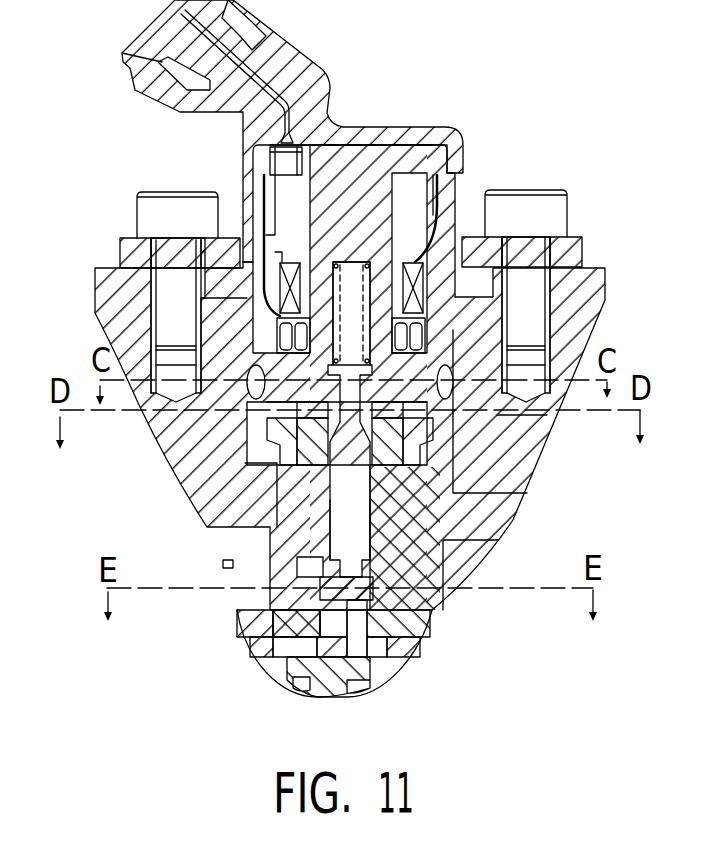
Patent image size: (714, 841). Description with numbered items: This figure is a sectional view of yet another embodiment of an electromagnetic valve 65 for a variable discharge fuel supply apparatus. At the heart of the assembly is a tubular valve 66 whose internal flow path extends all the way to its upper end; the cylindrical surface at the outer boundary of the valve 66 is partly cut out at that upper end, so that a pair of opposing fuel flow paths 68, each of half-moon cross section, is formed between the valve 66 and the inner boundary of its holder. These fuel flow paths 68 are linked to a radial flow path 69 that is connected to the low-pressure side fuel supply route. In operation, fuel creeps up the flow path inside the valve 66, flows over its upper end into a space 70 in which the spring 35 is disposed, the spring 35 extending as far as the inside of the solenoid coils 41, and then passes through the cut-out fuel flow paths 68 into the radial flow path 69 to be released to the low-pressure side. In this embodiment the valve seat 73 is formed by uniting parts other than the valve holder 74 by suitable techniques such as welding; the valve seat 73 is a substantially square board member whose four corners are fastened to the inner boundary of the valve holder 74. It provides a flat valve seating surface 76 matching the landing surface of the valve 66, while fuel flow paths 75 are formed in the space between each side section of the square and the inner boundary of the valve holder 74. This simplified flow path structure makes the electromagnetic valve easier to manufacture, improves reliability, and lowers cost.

The spring 35 is at (335, 250).
The solenoid coils 41 is at (455, 200).
The electromagnetic valve 65 is at (430, 132).
The tubular valve 66 is at (300, 498).
The fuel flow paths 68 is at (395, 410).
The radial flow path 69 is at (420, 440).
The space 70 is at (350, 260).
The valve seat 73 is at (285, 670).
The valve holder 74 is at (380, 530).
The fuel flow paths 75 is at (343, 597).
The flat valve seating surface 76 is at (353, 562).